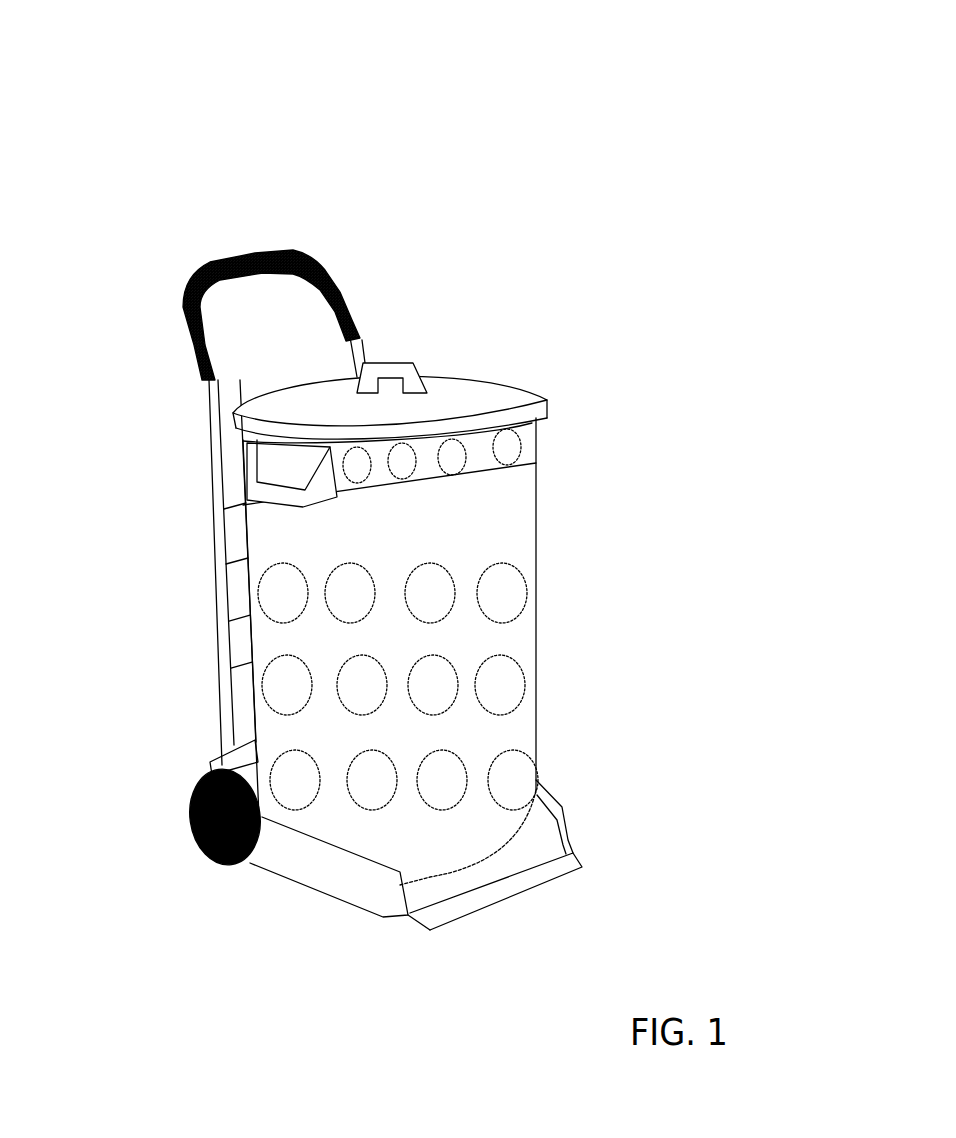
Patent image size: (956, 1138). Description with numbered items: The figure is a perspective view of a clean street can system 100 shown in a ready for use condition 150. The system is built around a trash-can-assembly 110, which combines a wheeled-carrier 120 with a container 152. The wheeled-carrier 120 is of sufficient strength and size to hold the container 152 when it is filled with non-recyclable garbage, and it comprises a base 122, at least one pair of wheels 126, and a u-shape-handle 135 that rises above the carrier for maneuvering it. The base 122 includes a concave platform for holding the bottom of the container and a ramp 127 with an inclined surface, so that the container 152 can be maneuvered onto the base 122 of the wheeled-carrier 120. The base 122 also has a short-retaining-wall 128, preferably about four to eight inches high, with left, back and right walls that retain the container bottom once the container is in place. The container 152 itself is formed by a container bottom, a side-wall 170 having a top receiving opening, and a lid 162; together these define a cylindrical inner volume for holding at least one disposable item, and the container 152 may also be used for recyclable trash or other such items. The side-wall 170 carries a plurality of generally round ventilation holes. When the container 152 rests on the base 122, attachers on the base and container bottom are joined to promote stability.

The clean street can system 100 is at (702, 62).
The trash-can-assembly 110 is at (717, 90).
The ready for use condition 150 is at (728, 125).
The u-shape-handle 135 is at (177, 312).
The wheeled-carrier 120 is at (213, 552).
The pair of wheels 126 is at (193, 792).
The base 122 is at (420, 897).
The ramp 127 is at (570, 872).
The short-retaining-wall 128 is at (555, 788).
The lid 162 is at (503, 380).
The container 152 is at (540, 445).
The side-wall 170 is at (542, 553).